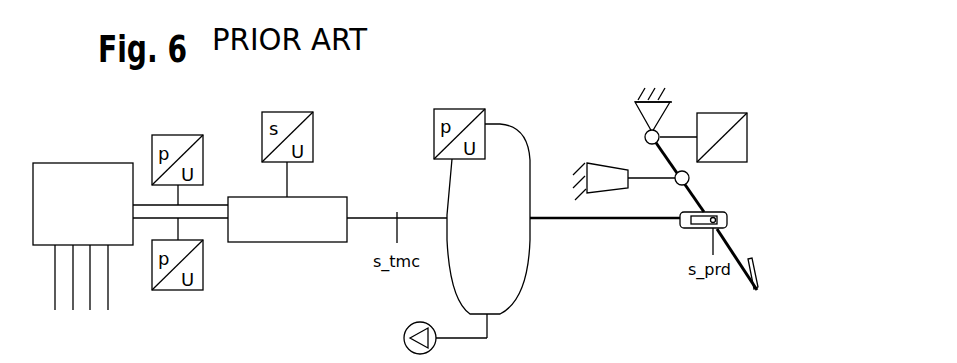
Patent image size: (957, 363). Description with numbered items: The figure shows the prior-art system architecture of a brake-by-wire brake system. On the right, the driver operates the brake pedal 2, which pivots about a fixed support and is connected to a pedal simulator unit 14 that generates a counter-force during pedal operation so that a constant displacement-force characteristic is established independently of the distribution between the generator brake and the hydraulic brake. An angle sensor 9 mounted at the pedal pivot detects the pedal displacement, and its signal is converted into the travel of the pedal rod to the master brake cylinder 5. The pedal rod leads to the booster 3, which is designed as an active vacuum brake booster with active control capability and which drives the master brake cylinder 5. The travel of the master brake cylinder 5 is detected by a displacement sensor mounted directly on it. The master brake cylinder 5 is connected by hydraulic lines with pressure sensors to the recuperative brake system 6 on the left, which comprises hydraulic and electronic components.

The recuperative brake system 6 is at (60, 163).
The master brake cylinder 5 is at (287, 242).
The booster 3 is at (527, 268).
The pedal simulator unit 14 is at (604, 176).
The angle sensor 9 is at (728, 113).
The brake pedal 2 is at (726, 240).